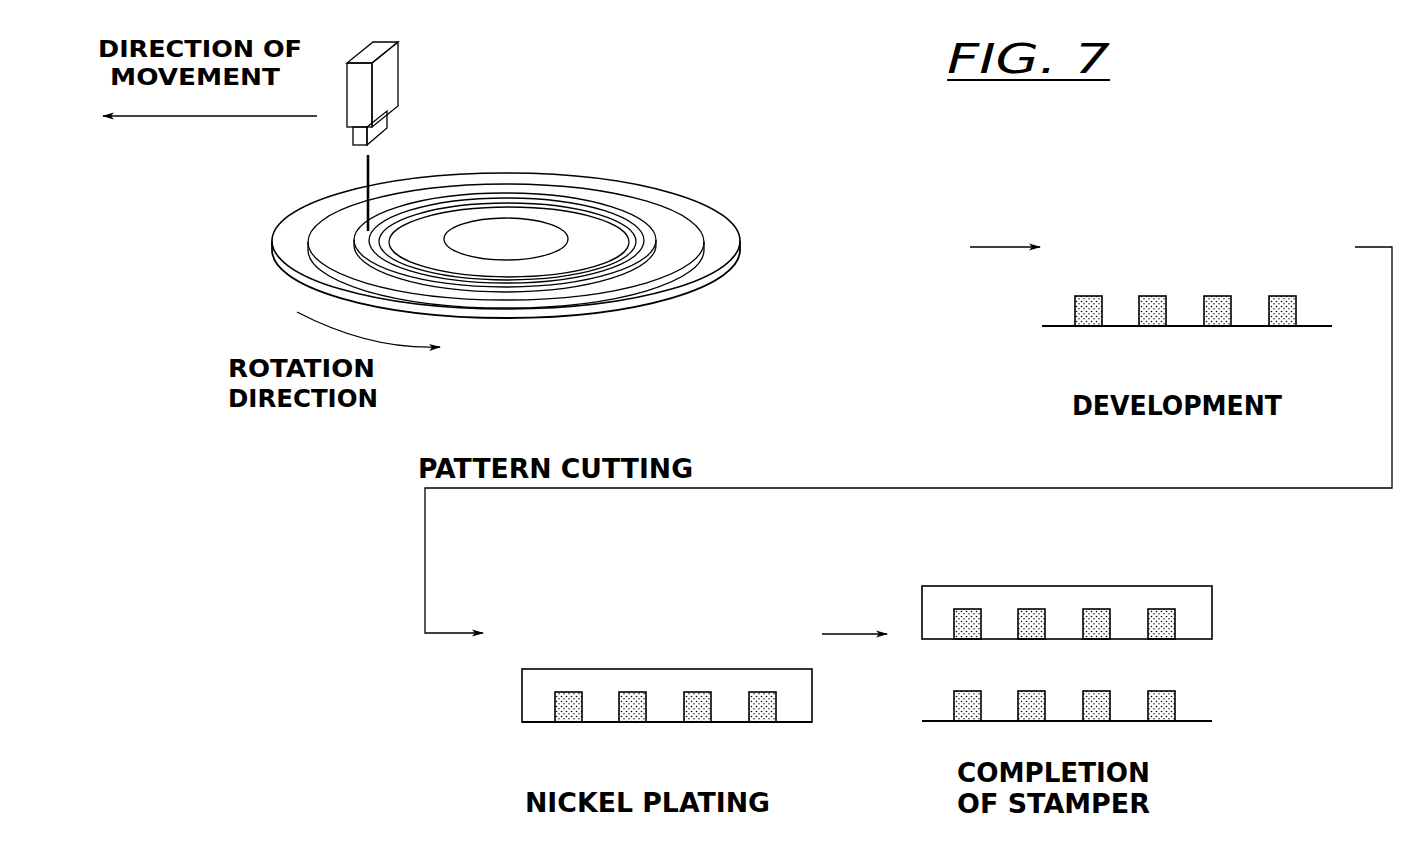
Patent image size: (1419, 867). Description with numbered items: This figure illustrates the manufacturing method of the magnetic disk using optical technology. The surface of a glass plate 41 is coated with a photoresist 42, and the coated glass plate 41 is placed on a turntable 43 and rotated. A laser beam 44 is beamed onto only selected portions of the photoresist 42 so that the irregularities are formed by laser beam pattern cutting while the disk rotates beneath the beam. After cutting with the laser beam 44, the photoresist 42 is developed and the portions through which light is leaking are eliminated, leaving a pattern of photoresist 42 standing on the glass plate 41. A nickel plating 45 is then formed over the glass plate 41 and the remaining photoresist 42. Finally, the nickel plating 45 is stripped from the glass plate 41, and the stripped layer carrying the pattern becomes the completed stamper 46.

The glass plate 41 is at (603, 289).
The photoresist 42 is at (628, 218).
The turntable 43 is at (682, 284).
The laser beam 44 is at (369, 175).
The nickel plating 45 is at (562, 669).
The stamper 46 is at (957, 586).